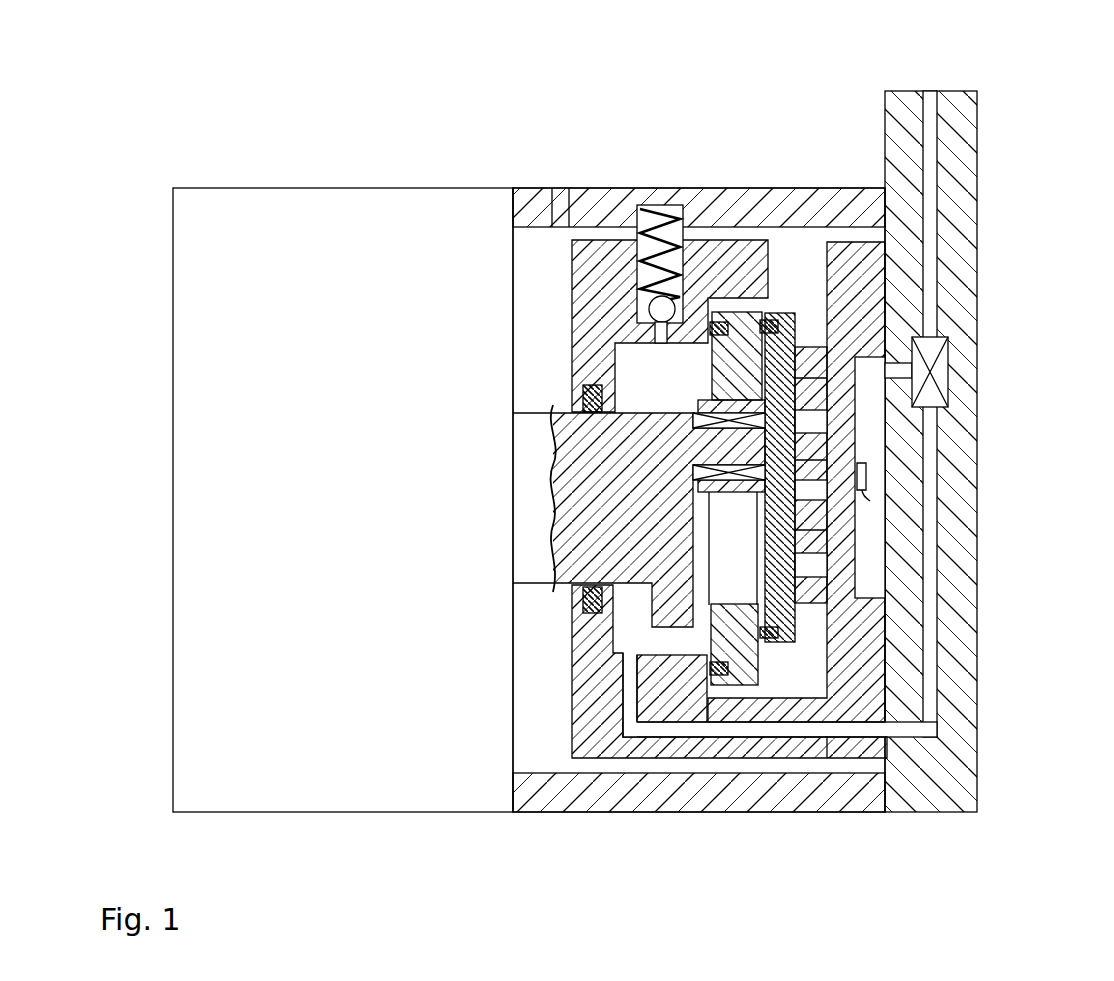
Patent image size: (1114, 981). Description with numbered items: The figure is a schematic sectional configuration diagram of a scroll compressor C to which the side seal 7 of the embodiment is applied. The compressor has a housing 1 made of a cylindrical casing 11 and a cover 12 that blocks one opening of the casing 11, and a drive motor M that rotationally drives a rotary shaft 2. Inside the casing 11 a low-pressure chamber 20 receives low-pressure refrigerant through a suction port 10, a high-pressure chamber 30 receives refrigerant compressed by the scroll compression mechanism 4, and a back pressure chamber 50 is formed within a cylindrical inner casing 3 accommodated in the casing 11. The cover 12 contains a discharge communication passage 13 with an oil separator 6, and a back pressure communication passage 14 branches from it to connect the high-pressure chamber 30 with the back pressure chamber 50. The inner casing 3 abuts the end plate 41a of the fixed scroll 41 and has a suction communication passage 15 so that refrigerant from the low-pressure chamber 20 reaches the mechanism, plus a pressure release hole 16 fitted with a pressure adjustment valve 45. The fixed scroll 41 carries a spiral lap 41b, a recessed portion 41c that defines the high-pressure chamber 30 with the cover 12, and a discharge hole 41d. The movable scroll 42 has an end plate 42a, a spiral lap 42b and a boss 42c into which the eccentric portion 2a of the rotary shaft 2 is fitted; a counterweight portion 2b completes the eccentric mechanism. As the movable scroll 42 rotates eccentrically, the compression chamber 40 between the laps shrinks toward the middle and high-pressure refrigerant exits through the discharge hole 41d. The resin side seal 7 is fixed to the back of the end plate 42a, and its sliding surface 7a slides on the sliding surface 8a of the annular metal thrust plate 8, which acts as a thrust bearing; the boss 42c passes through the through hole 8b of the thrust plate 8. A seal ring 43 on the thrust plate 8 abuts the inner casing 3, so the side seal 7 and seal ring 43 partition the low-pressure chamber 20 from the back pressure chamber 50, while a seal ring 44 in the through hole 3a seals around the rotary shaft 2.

The housing 1 is at (948, 893).
The rotary shaft 2 is at (530, 590).
The eccentric portion 2a is at (735, 473).
The counterweight portion 2b is at (665, 607).
The inner casing 3 is at (615, 226).
The through hole 3a is at (735, 447).
The scroll compression mechanism 4 is at (869, 93).
The oil separator 6 is at (935, 365).
The side seal 7 is at (768, 318).
The sliding surface 7a is at (760, 662).
The thrust plate 8 is at (718, 318).
The sliding surface 8a is at (775, 632).
The through hole 8b is at (718, 676).
The suction port 10 is at (559, 218).
The casing 11 is at (842, 796).
The cover 12 is at (925, 796).
The discharge communication passage 13 is at (930, 112).
The back pressure communication passage 14 is at (890, 735).
The suction communication passage 15 is at (775, 268).
The pressure release hole 16 is at (633, 377).
The low-pressure chamber 20 is at (542, 258).
The high-pressure chamber 30 is at (870, 580).
The compression chamber 40 is at (868, 490).
The fixed scroll 41 is at (858, 236).
The end plate 41a is at (862, 262).
The spiral lap 41b is at (845, 462).
The recessed portion 41c is at (897, 373).
The discharge hole 41d is at (838, 508).
The movable scroll 42 is at (792, 302).
The end plate 42a is at (805, 318).
The spiral lap 42b is at (822, 546).
The boss 42c is at (735, 517).
The seal ring 43 is at (730, 695).
The seal ring 44 is at (590, 395).
The pressure adjustment valve 45 is at (655, 240).
The back pressure chamber 50 is at (605, 357).
The scroll compressor C is at (315, 172).
The drive motor M is at (338, 782).